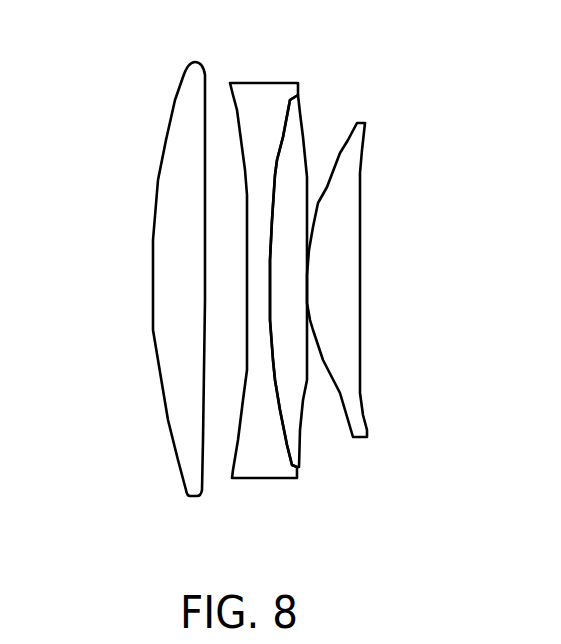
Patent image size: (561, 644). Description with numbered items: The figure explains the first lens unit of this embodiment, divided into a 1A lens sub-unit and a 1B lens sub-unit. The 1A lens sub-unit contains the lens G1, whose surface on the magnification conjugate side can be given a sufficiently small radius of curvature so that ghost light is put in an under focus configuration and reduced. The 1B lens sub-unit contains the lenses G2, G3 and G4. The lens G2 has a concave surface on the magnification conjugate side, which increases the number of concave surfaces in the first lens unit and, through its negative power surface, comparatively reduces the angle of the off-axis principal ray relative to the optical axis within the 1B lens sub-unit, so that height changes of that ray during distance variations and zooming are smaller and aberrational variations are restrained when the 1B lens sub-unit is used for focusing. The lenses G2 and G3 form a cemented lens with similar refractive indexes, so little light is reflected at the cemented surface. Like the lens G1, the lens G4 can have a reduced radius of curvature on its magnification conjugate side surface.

The lens G1 is at (183, 140).
The lens G2 is at (257, 110).
The lens G3 is at (290, 158).
The lens G4 is at (343, 177).
The 1A lens sub-unit 1A is at (148, 312).
The 1B lens sub-unit 1B is at (317, 294).